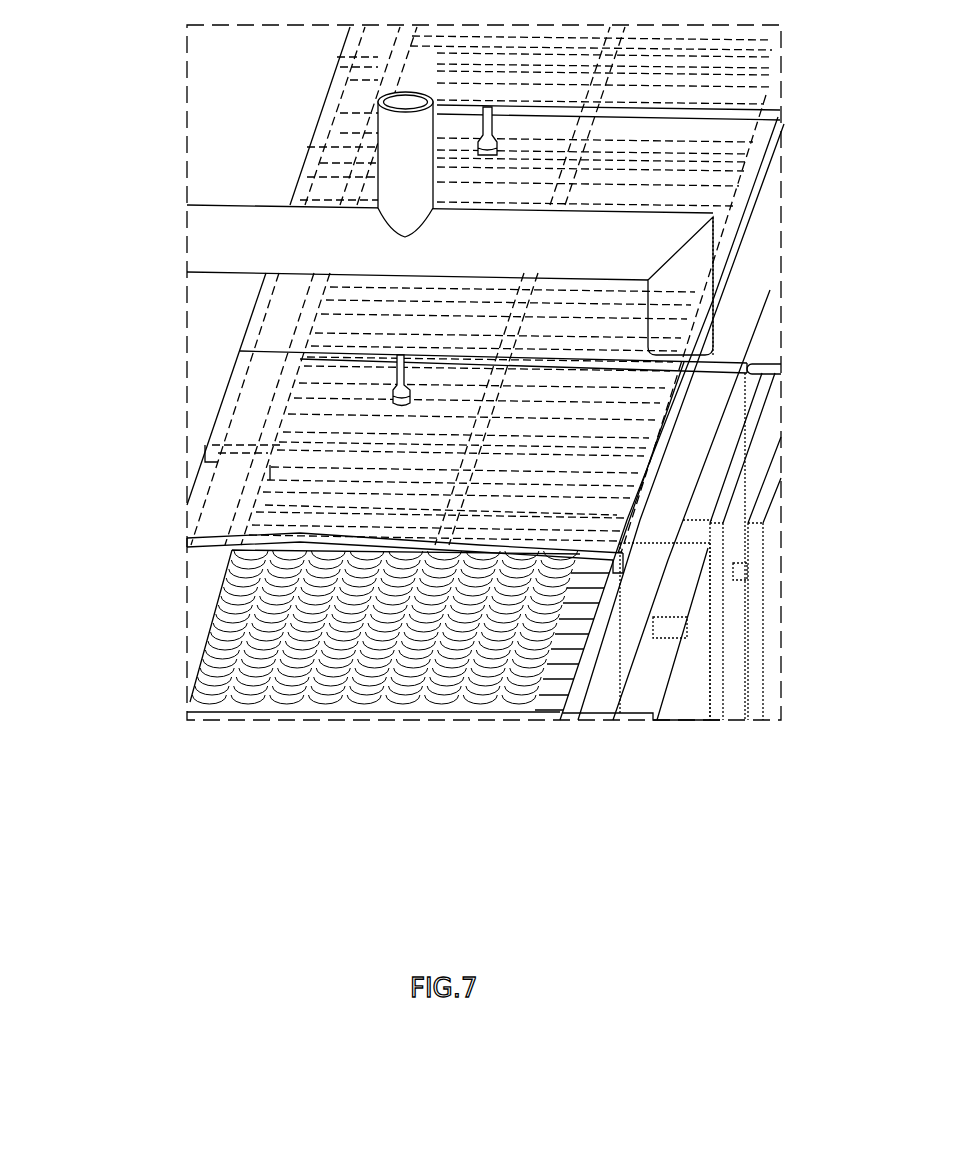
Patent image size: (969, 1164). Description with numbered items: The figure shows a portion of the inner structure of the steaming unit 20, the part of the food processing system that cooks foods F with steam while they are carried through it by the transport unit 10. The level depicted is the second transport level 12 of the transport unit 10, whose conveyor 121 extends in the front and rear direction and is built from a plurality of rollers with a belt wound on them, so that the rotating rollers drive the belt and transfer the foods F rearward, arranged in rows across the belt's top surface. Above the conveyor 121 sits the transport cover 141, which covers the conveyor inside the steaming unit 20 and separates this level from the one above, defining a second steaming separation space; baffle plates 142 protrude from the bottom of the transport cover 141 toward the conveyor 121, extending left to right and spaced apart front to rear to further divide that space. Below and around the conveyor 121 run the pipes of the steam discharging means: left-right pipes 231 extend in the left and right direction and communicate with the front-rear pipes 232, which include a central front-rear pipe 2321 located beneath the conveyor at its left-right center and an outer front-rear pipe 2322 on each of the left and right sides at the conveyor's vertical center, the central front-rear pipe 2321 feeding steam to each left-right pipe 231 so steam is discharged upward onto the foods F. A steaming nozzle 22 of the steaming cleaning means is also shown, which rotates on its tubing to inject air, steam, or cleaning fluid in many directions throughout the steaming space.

The transport unit 10 is at (655, 750).
The second transport level 12 is at (595, 717).
The conveyor 121 is at (370, 726).
The foods F is at (545, 707).
The transport cover 141 is at (186, 540).
The baffle plate 142 is at (197, 548).
The steaming unit 20 is at (780, 538).
The steaming nozzle 22 is at (392, 397).
The left-right pipes 231 is at (265, 505).
The front-rear pipes 232 is at (366, 413).
The central front-rear pipe 2321 is at (455, 499).
The outer front-rear pipe 2322 is at (277, 414).